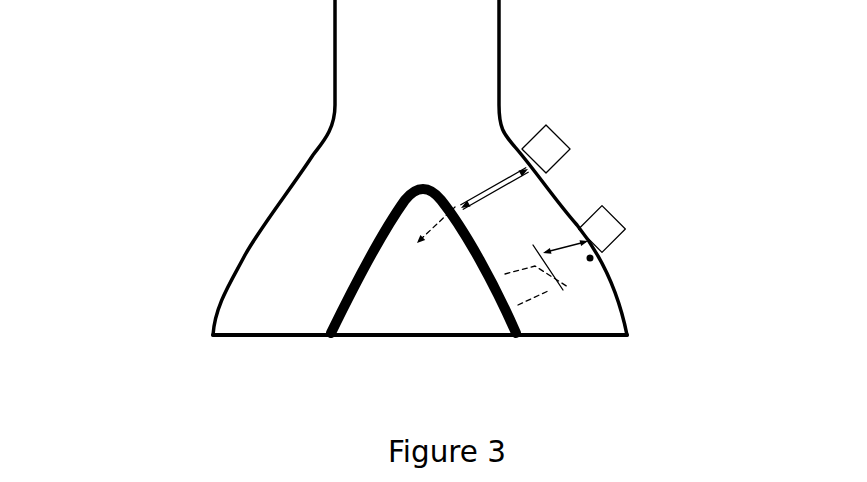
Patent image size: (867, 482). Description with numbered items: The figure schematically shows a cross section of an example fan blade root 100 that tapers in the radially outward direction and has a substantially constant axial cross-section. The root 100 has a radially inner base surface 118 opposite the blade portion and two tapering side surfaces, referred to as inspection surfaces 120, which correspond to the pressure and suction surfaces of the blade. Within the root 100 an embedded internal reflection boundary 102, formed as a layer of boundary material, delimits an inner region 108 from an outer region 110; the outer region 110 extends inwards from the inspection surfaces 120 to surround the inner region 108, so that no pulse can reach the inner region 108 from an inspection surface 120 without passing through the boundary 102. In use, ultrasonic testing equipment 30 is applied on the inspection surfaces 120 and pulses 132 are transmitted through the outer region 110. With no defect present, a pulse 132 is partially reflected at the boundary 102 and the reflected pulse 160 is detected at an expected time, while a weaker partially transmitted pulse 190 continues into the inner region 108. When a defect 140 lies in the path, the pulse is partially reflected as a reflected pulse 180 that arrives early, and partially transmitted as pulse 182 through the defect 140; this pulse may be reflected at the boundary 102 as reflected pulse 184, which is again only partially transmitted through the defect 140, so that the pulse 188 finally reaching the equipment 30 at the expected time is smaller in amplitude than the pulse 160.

The fan blade root 100 is at (298, 234).
The outer region 110 is at (330, 170).
The inspection surfaces 120 is at (240, 275).
The base surface 118 is at (260, 337).
The inner region 108 is at (362, 337).
The internal reflection boundary 102 is at (503, 317).
The pulses 132 is at (500, 170).
The ultrasonic testing equipment 30 is at (570, 150).
The reflected pulse 160 is at (487, 192).
The partially transmitted pulse 190 is at (440, 243).
The partially transmitted pulse 182 is at (510, 270).
The reflected pulse 184 is at (540, 296).
The defect 140 is at (560, 283).
The reflected pulse 180 is at (556, 268).
The pulse 188 is at (577, 263).